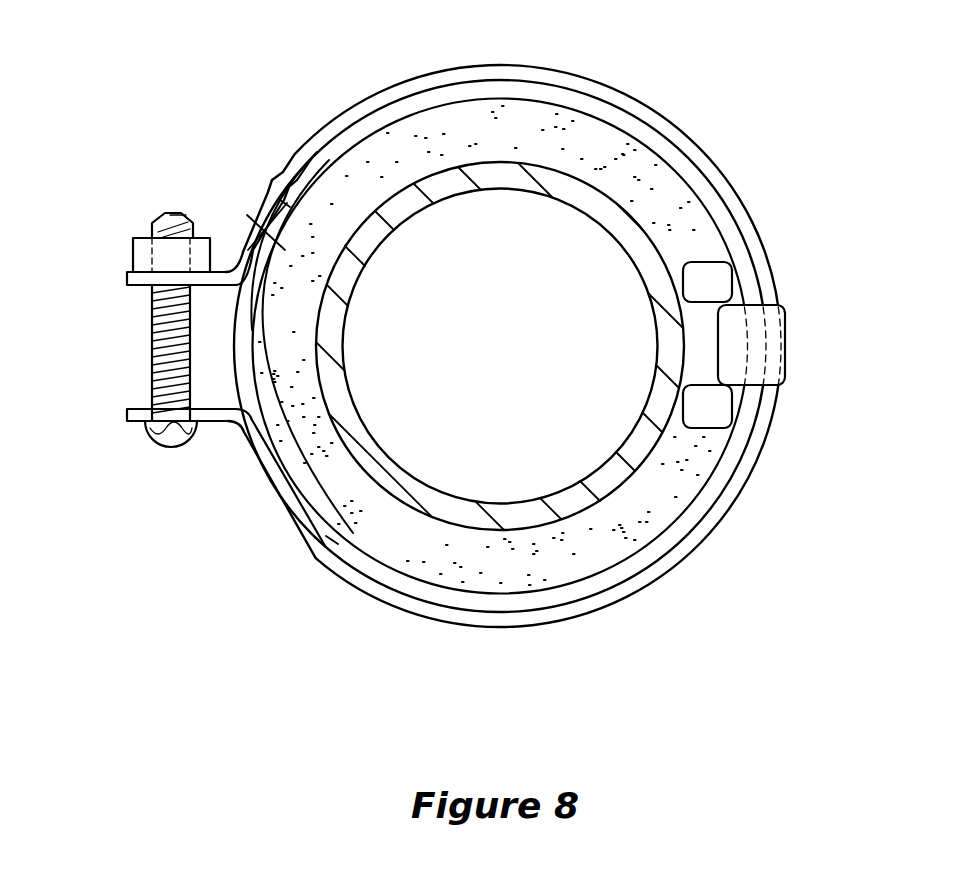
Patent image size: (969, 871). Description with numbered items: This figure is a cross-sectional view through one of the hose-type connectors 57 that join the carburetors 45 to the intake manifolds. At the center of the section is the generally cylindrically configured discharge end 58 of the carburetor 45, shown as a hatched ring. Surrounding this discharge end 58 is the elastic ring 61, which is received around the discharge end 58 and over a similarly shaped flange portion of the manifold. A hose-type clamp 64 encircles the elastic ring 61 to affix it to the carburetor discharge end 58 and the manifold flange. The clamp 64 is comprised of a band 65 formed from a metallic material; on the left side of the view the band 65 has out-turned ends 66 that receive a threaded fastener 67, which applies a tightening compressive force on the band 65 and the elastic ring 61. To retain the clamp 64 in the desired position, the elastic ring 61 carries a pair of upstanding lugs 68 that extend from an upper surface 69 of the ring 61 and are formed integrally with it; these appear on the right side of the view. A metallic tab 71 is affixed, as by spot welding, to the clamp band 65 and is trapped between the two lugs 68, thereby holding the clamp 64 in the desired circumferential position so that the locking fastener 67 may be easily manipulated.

The carburetor 45 is at (462, 154).
The hose-type connector 57 is at (270, 129).
The discharge end 58 is at (563, 182).
The elastic ring 61 is at (384, 591).
The hose-type clamp 64 is at (330, 120).
The band 65 is at (313, 552).
The out-turned ends 66 is at (128, 276).
The threaded fastener 67 is at (155, 372).
The upstanding lugs 68 is at (703, 273).
The upper surface 69 is at (472, 578).
The metallic tab 71 is at (756, 346).